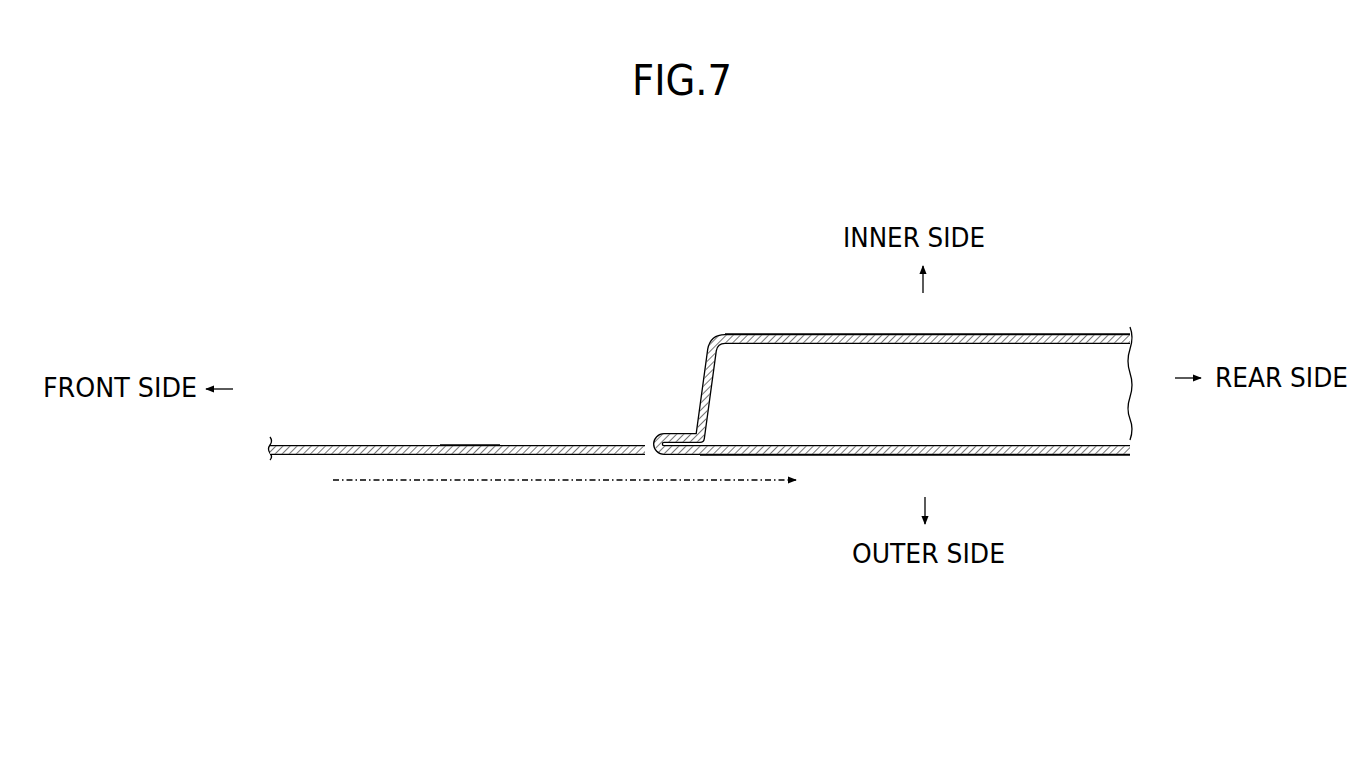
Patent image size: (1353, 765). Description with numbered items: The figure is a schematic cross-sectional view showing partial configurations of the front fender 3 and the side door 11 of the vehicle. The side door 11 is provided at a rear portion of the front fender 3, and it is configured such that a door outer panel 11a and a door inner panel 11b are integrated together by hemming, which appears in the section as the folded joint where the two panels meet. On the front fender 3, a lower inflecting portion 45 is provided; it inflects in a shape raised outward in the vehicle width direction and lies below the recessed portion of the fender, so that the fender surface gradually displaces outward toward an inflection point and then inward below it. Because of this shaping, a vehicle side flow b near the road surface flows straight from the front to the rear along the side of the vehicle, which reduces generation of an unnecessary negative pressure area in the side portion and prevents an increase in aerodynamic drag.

The front fender 3 is at (418, 444).
The lower inflecting portion 45 is at (464, 445).
The side door 11 is at (1063, 456).
The door outer panel 11a is at (984, 445).
The door inner panel 11b is at (1038, 334).
The vehicle side flow b is at (443, 483).